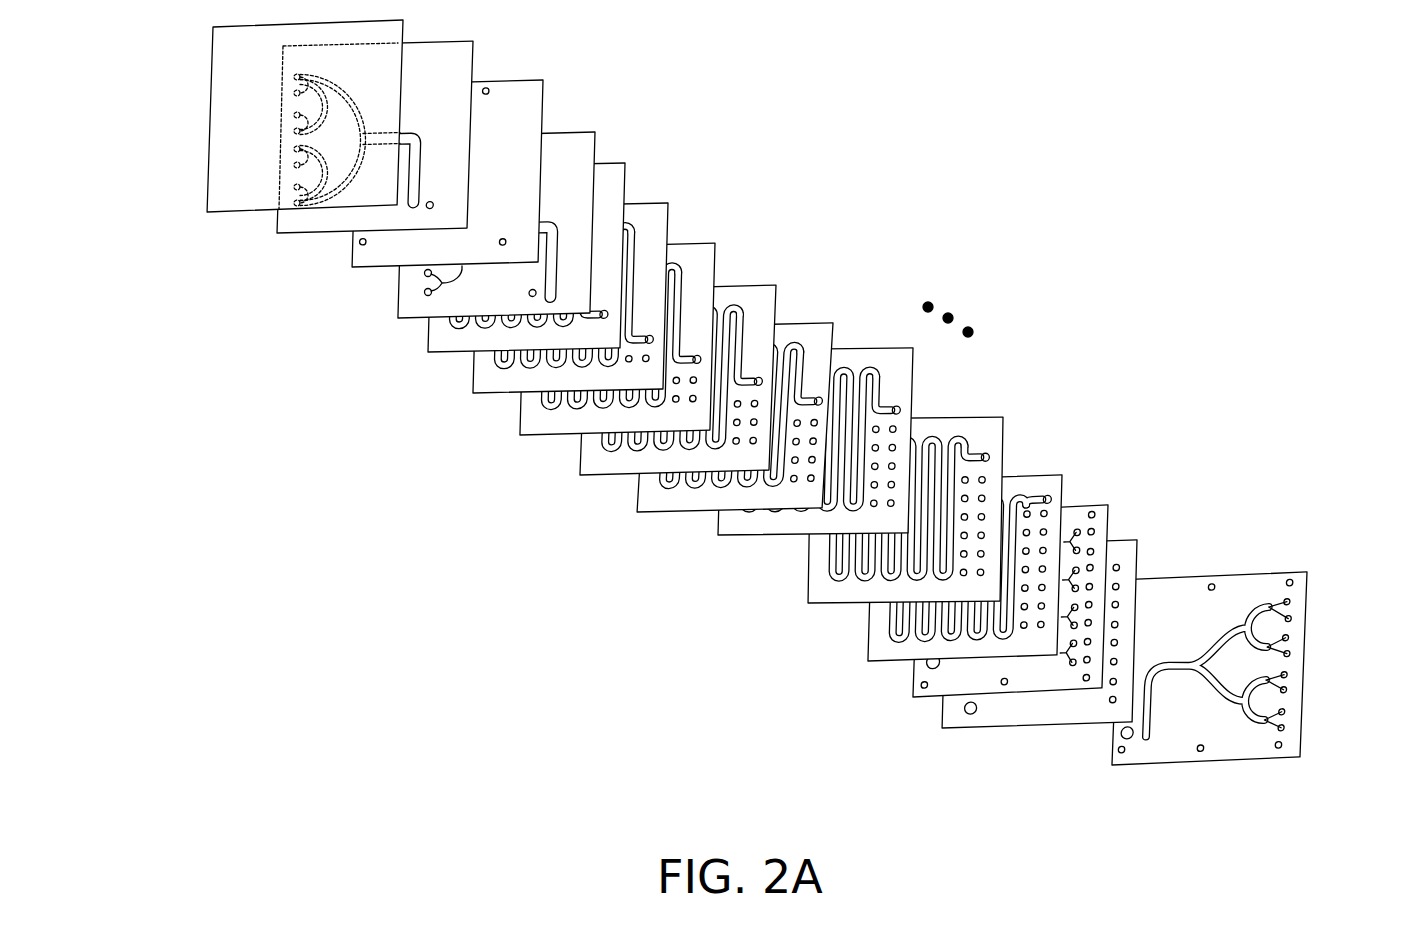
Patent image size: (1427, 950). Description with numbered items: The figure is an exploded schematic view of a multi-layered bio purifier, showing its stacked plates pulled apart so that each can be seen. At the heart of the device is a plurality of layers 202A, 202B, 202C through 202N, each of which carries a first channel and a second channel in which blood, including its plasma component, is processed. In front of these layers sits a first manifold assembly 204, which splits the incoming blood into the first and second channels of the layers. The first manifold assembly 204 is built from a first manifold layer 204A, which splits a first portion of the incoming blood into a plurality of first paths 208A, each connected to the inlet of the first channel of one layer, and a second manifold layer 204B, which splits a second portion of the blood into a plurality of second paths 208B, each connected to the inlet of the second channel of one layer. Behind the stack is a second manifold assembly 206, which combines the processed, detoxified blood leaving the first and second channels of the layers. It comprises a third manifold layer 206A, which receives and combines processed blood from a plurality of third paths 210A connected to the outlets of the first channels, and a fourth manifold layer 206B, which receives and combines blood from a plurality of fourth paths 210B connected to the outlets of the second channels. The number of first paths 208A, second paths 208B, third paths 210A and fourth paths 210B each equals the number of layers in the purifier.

The layer 202A is at (607, 163).
The layer 202B is at (653, 203).
The layer 202C is at (695, 243).
The layer 202N is at (1023, 475).
The first manifold assembly 204 is at (412, 265).
The first manifold layer 204A is at (292, 233).
The second manifold layer 204B is at (398, 318).
The second manifold assembly 206 is at (1165, 553).
The third manifold layer 206A is at (1265, 574).
The fourth manifold layer 206B is at (1050, 540).
The first paths 208A is at (297, 150).
The second paths 208B is at (428, 292).
The third paths 210A is at (1297, 652).
The fourth paths 210B is at (1085, 542).